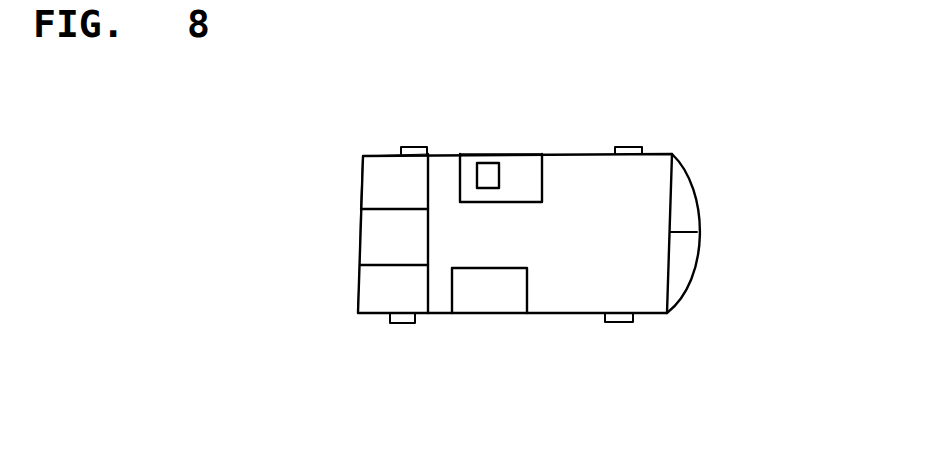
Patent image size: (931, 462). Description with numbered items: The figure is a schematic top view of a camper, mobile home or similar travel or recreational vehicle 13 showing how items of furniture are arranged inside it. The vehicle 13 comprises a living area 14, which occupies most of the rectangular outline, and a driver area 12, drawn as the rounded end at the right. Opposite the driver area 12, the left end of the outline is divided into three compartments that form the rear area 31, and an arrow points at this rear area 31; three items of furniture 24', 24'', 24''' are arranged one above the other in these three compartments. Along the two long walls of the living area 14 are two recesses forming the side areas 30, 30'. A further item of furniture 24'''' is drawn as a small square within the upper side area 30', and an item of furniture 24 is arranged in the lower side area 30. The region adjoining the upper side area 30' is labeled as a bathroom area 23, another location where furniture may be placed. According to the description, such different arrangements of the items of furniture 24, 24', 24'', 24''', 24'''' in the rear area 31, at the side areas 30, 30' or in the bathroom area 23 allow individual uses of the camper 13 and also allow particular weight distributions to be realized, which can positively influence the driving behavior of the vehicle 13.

The driver area 12 is at (683, 217).
The camper, mobile home or similar travel or recreational vehicle 13 is at (738, 172).
The living area 14 is at (575, 230).
The bathroom area 23 is at (513, 178).
The item of furniture 24 is at (525, 329).
The item of furniture 24' is at (383, 331).
The item of furniture 24'' is at (326, 257).
The item of furniture 24''' is at (359, 150).
The item of furniture 24'''' is at (459, 122).
The side area 30 is at (494, 327).
The side area 30' is at (502, 127).
The rear area 31 is at (345, 237).